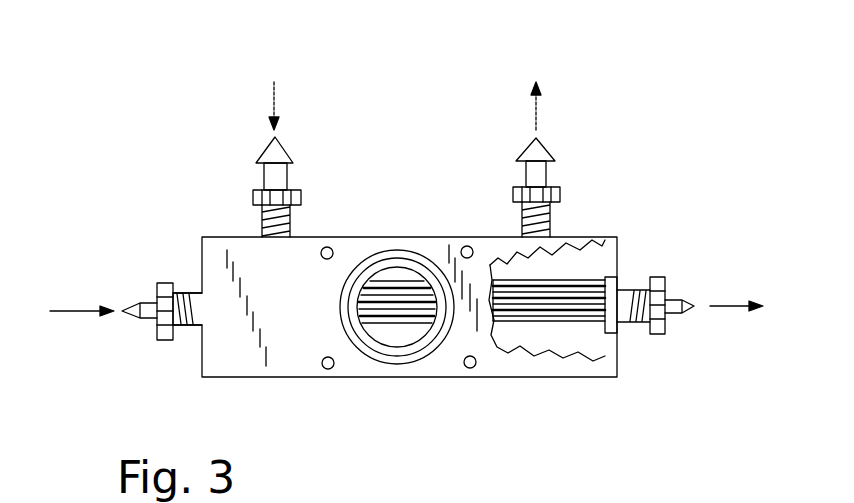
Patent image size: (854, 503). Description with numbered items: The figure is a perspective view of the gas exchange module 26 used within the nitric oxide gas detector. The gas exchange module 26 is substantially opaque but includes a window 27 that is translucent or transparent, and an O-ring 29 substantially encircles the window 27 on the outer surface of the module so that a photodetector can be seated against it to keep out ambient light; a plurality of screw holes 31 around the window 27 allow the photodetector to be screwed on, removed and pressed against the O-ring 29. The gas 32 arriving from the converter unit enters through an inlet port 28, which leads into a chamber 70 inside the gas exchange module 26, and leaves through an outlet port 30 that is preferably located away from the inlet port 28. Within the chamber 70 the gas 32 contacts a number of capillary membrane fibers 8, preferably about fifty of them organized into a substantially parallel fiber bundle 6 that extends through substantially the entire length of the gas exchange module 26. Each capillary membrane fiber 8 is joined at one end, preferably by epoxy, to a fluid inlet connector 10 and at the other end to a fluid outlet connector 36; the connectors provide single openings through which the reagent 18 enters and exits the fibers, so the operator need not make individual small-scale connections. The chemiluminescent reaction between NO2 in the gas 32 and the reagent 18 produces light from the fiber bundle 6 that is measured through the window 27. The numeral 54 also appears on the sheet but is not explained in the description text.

The gas exchange module 26 is at (444, 62).
The window 27 is at (403, 338).
The O-ring 29 is at (466, 330).
The screw holes 31 is at (330, 246).
The chamber 70 is at (546, 272).
The fiber bundle 6 is at (593, 273).
The capillary membrane fibers 8 is at (586, 322).
The inlet port 28 is at (262, 157).
The outlet port 30 is at (543, 150).
The gas 32 is at (272, 101).
The fluid inlet connector 10 is at (165, 340).
The fluid outlet connector 36 is at (655, 335).
The reagent 18 is at (86, 308).
The element 54 is at (405, 497).